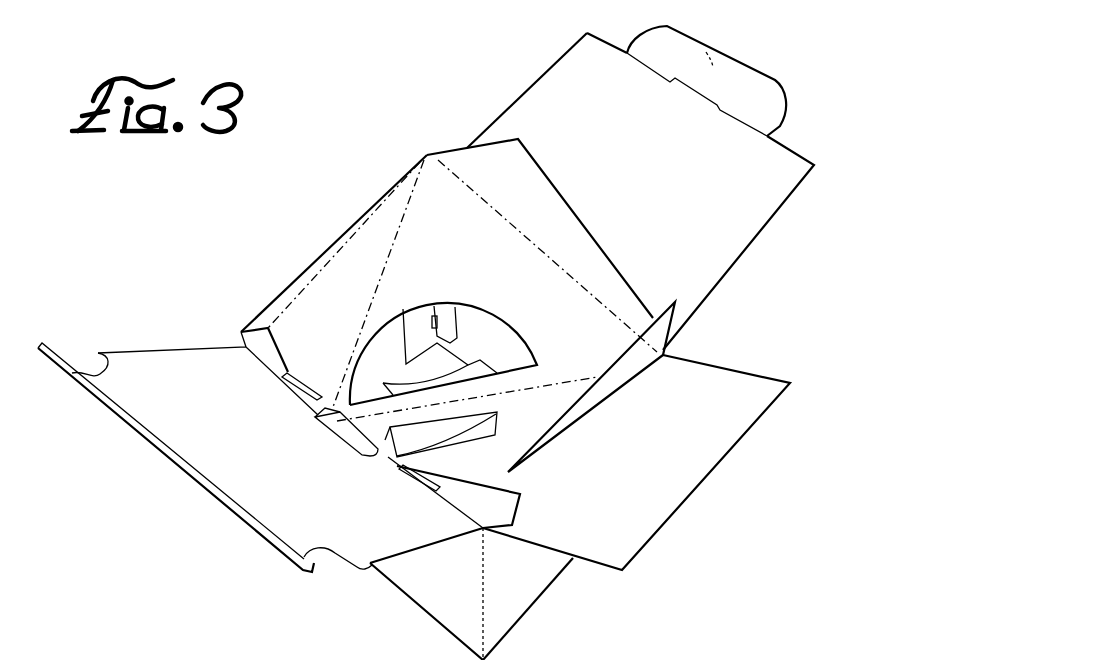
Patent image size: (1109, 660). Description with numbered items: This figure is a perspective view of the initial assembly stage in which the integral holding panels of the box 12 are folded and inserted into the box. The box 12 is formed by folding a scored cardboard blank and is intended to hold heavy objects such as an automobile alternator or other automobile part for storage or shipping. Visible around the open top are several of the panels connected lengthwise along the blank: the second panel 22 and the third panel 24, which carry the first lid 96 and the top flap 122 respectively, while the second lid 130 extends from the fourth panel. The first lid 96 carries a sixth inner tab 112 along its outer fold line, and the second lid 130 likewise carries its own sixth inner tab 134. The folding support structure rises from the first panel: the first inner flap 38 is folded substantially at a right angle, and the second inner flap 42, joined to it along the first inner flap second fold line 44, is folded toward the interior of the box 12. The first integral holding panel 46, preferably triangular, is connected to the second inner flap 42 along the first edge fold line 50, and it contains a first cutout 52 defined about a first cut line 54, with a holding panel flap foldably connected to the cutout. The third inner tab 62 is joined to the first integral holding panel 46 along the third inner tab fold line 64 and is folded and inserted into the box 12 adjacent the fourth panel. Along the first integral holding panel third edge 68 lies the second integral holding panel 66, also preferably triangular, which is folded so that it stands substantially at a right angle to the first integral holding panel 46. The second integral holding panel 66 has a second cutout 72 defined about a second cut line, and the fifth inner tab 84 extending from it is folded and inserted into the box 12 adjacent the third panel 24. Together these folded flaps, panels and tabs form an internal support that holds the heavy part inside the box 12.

The box 12 is at (383, 70).
The second panel 22 is at (432, 590).
The third panel 24 is at (504, 580).
The first inner flap 38 is at (278, 305).
The second inner flap 42 is at (313, 332).
The first inner flap second fold line 44 is at (355, 232).
The first integral holding panel 46 is at (449, 262).
The first edge fold line 50 is at (388, 195).
The first cutout 52 is at (466, 304).
The first cut line 54 is at (476, 362).
The third inner tab 62 is at (510, 200).
The third inner tab fold line 64 is at (573, 284).
The second integral holding panel 66 is at (518, 425).
The first integral holding panel third edge 68 is at (555, 382).
The second cutout 72 is at (455, 442).
The fifth inner tab 84 is at (655, 338).
The first lid 96 is at (245, 455).
The sixth inner tab 112 is at (110, 398).
The top flap 122 is at (609, 464).
The second lid 130 is at (630, 172).
The sixth inner tab 134 is at (706, 52).